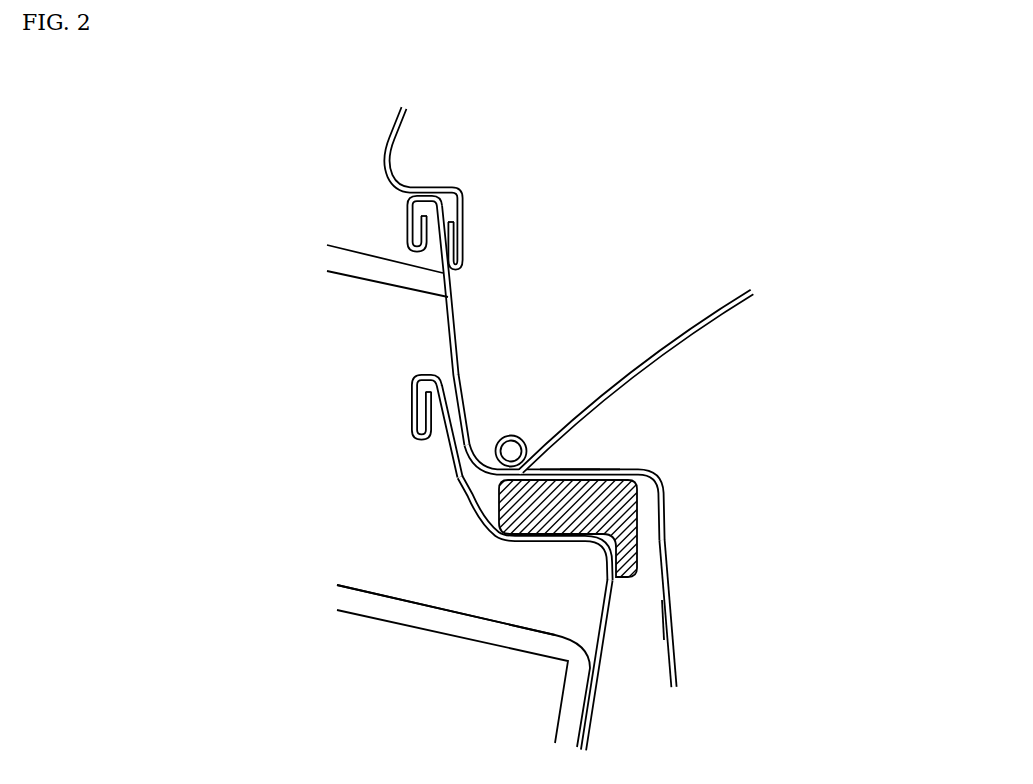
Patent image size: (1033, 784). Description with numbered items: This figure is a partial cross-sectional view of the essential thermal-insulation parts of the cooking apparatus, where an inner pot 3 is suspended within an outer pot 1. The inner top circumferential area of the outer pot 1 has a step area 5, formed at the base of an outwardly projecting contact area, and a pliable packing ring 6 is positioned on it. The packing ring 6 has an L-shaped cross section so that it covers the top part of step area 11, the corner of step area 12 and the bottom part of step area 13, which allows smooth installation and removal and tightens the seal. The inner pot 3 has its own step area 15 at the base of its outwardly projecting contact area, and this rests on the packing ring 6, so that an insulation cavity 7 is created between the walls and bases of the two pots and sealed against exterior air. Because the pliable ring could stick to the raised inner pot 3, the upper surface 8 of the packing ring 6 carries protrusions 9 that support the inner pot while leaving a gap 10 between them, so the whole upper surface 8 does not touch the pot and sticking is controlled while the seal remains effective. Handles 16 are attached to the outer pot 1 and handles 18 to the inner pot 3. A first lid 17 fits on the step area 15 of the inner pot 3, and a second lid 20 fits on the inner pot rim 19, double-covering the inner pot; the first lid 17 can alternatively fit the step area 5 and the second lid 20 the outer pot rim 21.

The outer pot 1 is at (580, 725).
The inner pot 3 is at (666, 648).
The step area 5 is at (572, 539).
The packing ring 6 is at (499, 502).
The insulation cavity 7 is at (639, 615).
The upper surface 8 is at (516, 462).
The protrusions 9 is at (627, 466).
The gap 10 is at (567, 472).
The top part of step area 11 is at (507, 537).
The corner of step area 12 is at (612, 546).
The bottom part of step area 13 is at (604, 586).
The step area 15 is at (593, 462).
The handles 16 is at (450, 630).
The first lid 17 is at (643, 368).
The handles 18 is at (365, 280).
The inner pot rim 19 is at (403, 198).
The second lid 20 is at (390, 146).
The outer pot rim 21 is at (410, 376).